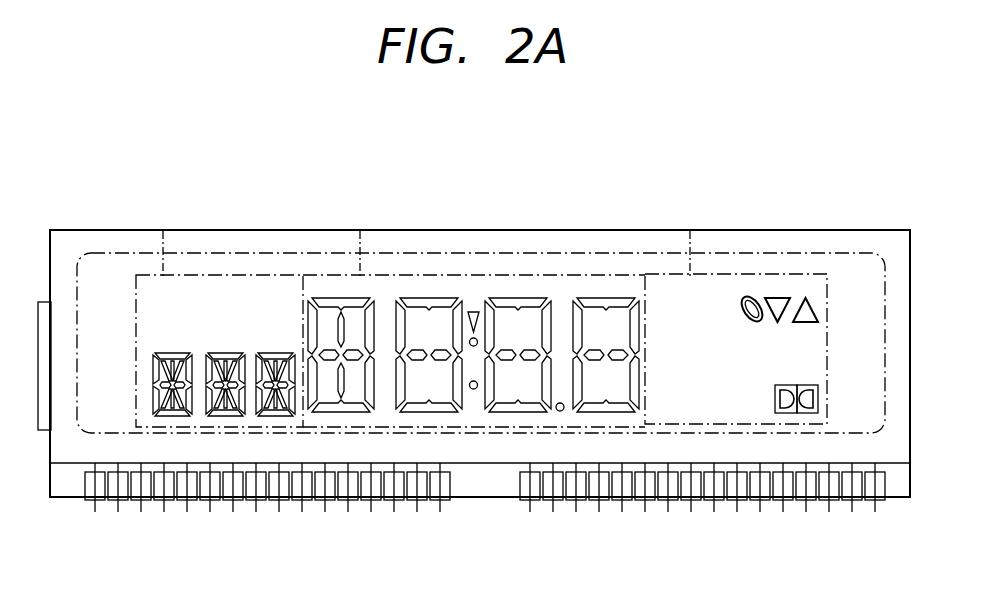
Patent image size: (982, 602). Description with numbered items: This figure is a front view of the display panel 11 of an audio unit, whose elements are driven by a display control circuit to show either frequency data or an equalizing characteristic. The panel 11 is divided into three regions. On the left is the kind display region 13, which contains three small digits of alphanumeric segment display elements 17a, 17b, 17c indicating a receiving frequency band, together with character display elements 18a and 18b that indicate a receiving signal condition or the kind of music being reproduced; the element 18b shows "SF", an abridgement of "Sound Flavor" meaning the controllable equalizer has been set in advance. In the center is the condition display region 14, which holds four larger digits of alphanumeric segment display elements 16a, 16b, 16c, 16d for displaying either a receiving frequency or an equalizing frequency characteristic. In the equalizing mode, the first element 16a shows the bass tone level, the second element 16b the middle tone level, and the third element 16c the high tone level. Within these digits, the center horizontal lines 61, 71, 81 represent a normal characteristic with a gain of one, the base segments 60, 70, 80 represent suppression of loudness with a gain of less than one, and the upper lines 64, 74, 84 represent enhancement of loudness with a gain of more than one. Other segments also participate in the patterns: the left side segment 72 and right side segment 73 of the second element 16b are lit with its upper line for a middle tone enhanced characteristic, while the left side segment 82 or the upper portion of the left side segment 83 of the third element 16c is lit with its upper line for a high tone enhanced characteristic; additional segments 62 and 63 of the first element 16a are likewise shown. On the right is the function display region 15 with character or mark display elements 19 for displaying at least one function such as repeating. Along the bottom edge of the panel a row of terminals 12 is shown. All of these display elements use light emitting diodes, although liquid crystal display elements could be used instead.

The display panel 11 is at (551, 229).
The terminal pins 12 is at (622, 490).
The kind display region 13 is at (168, 231).
The condition display region 14 is at (363, 231).
The function display region 15 is at (695, 231).
The first alphanumeric segment display element 16a is at (344, 349).
The second alphanumeric segment display element 16b is at (443, 347).
The third alphanumeric segment display element 16c is at (519, 323).
The fourth alphanumeric segment display element 16d is at (606, 298).
The alphanumeric segment display element 17a is at (183, 355).
The alphanumeric segment display element 17b is at (221, 352).
The alphanumeric segment display element 17c is at (287, 353).
The character display element 18a is at (150, 303).
The character display element 18b is at (270, 285).
The character display elements 19 is at (717, 287).
The base segment 60 is at (340, 412).
The center horizontal line 61 is at (352, 413).
The segment of first digit 62 is at (318, 408).
The segment of first digit 63 is at (376, 394).
The upper line 64 is at (336, 297).
The base segment 70 is at (430, 413).
The center horizontal line 71 is at (460, 402).
The left side segment 72 is at (404, 408).
The right side segment 73 is at (476, 392).
The upper line 74 is at (425, 297).
The base segment 80 is at (522, 413).
The center horizontal line 81 is at (498, 351).
The left side segment 82 is at (495, 376).
The upper portion of the left side segment 83 is at (560, 401).
The upper line 84 is at (518, 297).